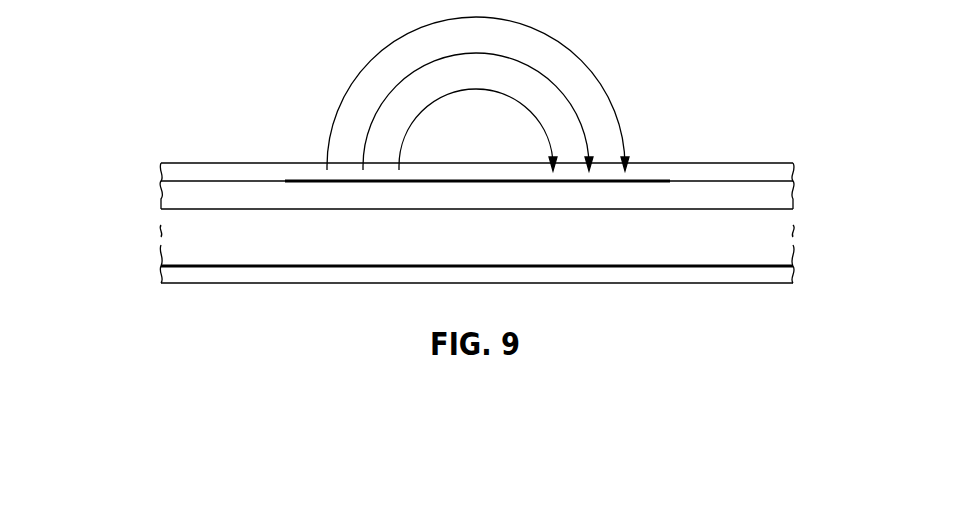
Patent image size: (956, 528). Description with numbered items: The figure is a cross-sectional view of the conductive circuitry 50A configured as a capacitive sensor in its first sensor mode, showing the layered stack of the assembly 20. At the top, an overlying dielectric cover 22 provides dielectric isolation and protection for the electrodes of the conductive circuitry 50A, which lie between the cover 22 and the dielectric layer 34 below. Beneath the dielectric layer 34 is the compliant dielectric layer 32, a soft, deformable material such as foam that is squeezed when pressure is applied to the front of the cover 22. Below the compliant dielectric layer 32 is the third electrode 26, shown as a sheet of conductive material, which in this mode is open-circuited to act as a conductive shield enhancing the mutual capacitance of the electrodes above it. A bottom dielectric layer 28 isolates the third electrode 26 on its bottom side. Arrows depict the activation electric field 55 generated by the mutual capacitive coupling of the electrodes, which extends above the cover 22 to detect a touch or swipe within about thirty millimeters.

The cover glass assembly 20 is at (118, 190).
The dielectric cover 22 is at (775, 168).
The dielectric layer 34 is at (783, 195).
The compliant dielectric layer 32 is at (783, 243).
The third electrode 26 is at (598, 268).
The bottom dielectric layer 28 is at (775, 278).
The conductive circuitry 50A is at (683, 170).
The activation electric field 55 is at (598, 78).